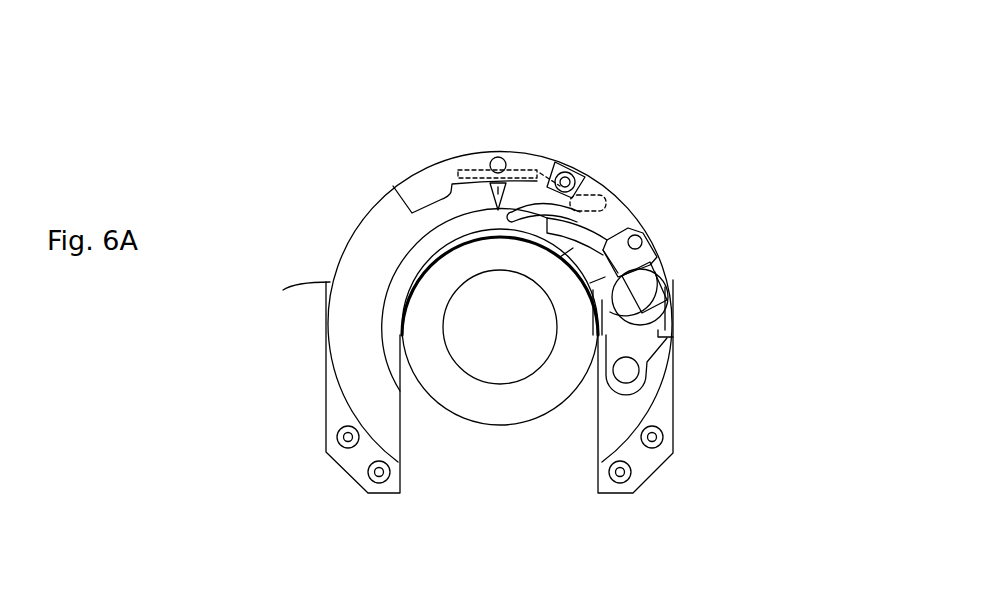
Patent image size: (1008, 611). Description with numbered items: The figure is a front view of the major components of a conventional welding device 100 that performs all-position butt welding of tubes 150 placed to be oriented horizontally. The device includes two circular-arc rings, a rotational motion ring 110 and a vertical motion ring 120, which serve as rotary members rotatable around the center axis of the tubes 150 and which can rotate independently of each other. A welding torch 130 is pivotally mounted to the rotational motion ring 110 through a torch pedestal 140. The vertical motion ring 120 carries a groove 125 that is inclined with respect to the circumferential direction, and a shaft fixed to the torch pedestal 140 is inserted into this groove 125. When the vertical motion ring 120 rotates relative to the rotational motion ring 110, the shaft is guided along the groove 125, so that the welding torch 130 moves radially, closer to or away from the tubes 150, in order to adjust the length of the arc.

The welding device 100 is at (796, 151).
The rotational motion ring 110 is at (620, 407).
The vertical motion ring 120 is at (360, 303).
The groove 125 is at (597, 195).
The welding torch 130 is at (533, 160).
The torch pedestal 140 is at (623, 213).
The tubes 150 is at (512, 403).